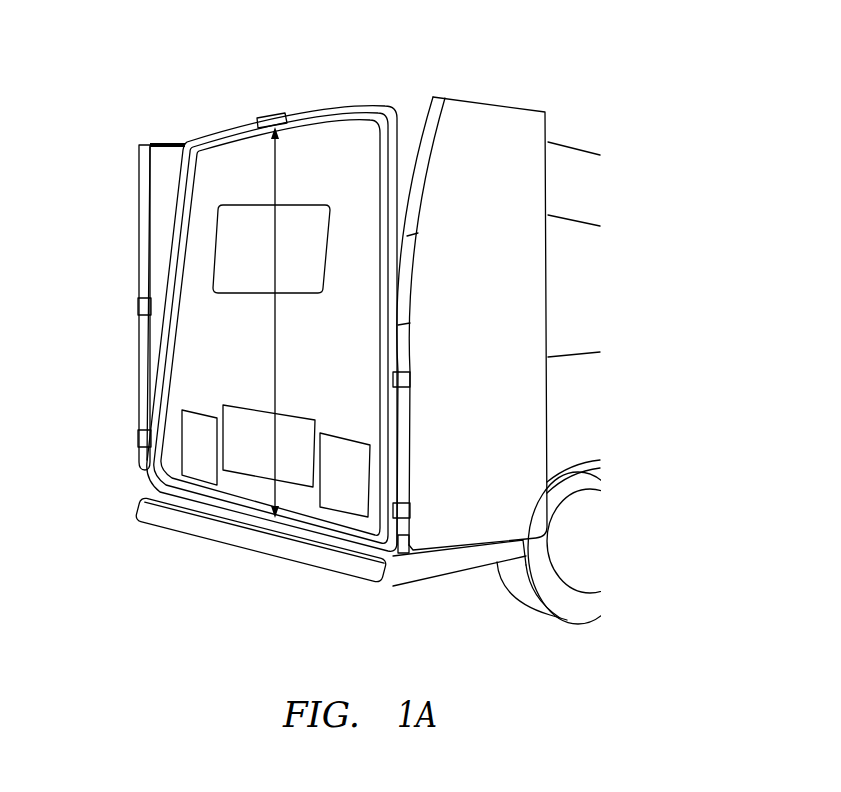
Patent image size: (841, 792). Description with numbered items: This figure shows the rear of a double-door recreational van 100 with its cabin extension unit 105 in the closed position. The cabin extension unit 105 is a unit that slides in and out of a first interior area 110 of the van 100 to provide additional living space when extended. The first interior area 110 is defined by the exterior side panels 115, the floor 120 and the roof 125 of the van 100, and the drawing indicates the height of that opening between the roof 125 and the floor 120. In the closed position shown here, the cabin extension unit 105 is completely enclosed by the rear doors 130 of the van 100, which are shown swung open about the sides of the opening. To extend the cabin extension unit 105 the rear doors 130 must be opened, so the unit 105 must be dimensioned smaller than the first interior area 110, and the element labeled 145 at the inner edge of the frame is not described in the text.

The recreational van 100 is at (670, 68).
The cabin extension unit 105 is at (368, 350).
The first interior area 110 is at (273, 362).
The exterior side panels 115 is at (163, 223).
The floor 120 is at (228, 497).
The roof 125 is at (302, 110).
The rear doors 130 is at (158, 143).
The gasket 145 is at (377, 120).